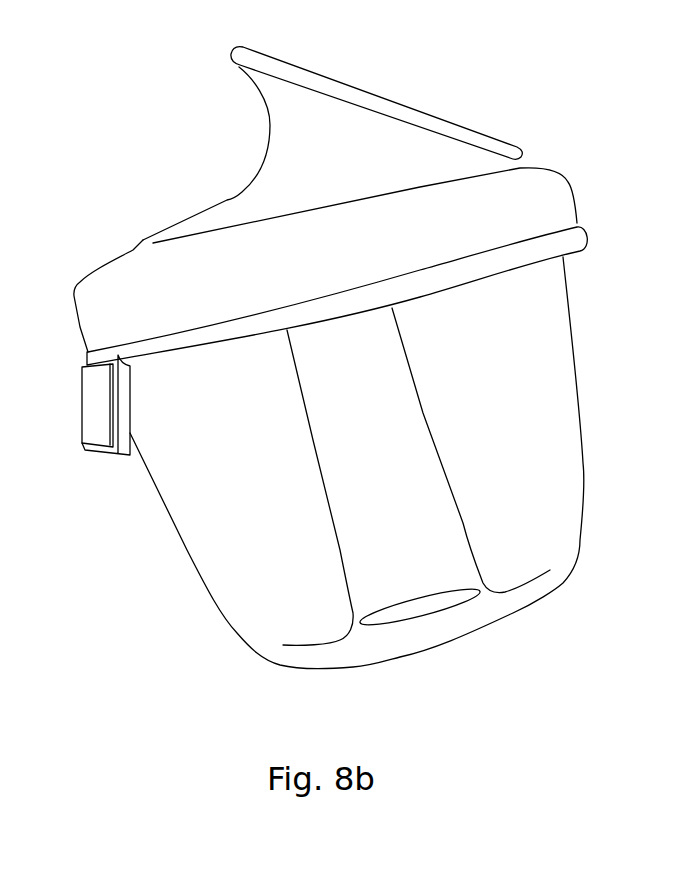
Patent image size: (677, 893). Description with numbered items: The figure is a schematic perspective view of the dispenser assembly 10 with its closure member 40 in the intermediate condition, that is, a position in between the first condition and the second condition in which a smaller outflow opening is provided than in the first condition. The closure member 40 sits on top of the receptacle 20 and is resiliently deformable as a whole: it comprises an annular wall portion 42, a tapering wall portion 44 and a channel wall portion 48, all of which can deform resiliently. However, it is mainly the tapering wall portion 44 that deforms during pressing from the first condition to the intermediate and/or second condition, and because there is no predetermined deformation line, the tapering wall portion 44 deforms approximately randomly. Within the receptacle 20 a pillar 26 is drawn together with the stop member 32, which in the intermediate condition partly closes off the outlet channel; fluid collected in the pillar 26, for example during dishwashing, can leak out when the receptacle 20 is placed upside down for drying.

The dispenser assembly 10 is at (210, 148).
The receptacle 20 is at (263, 610).
The pillar 26 is at (355, 482).
The stop member 32 is at (416, 476).
The closure member 40 is at (115, 280).
The annular wall portion 42 is at (590, 196).
The tapering wall portion 44 is at (220, 197).
The channel wall portion 48 is at (233, 92).